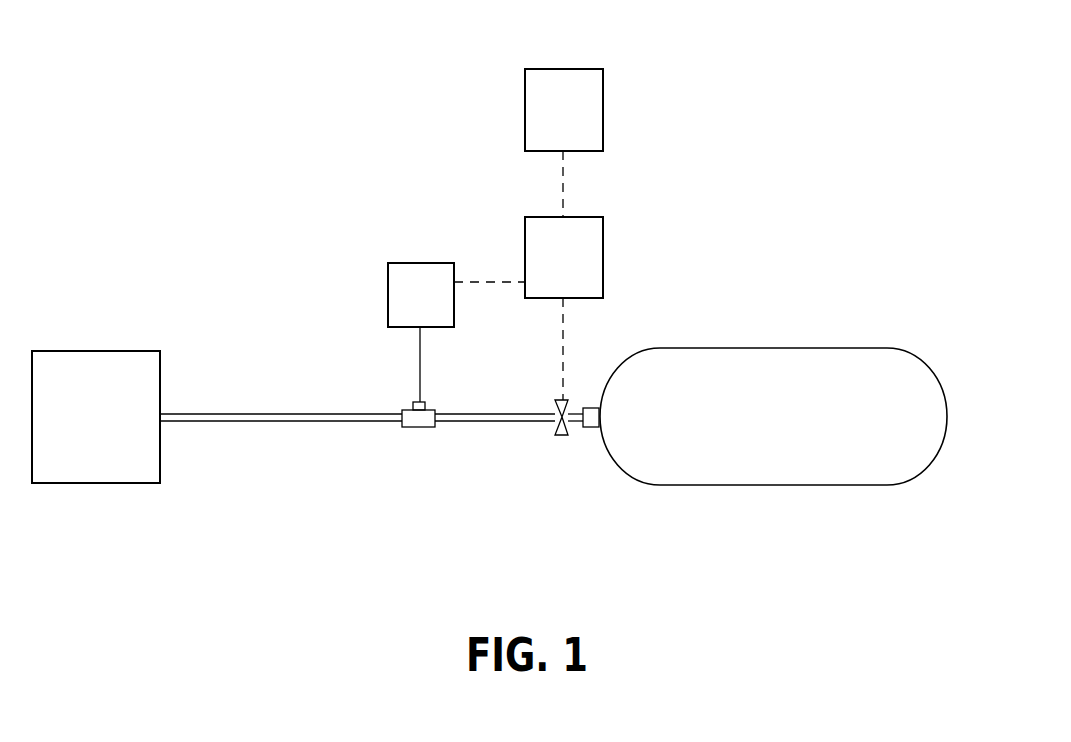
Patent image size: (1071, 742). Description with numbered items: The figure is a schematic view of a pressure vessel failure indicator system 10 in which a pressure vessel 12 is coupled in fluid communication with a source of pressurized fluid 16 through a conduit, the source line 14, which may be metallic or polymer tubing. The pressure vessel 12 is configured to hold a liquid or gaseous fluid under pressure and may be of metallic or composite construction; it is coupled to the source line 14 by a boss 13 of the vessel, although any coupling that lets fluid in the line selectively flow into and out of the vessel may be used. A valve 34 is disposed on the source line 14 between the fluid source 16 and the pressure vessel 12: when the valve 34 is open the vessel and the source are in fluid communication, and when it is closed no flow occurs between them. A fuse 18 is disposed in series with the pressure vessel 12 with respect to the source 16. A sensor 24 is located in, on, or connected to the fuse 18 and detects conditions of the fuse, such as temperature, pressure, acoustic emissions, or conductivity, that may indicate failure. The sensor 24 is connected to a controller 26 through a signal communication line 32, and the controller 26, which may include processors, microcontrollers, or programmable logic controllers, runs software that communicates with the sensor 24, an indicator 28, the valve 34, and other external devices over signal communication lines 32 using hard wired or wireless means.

The pressure vessel failure indicator system 10 is at (723, 171).
The pressure vessel 12 is at (759, 427).
The boss 13 is at (592, 428).
The source line 14 is at (292, 418).
The source of pressurized fluid 16 is at (82, 429).
The fuse 18 is at (420, 428).
The sensor 24 is at (407, 307).
The controller 26 is at (550, 270).
The indicator 28 is at (550, 122).
The signal communication line 32 is at (564, 175).
The valve 34 is at (560, 436).